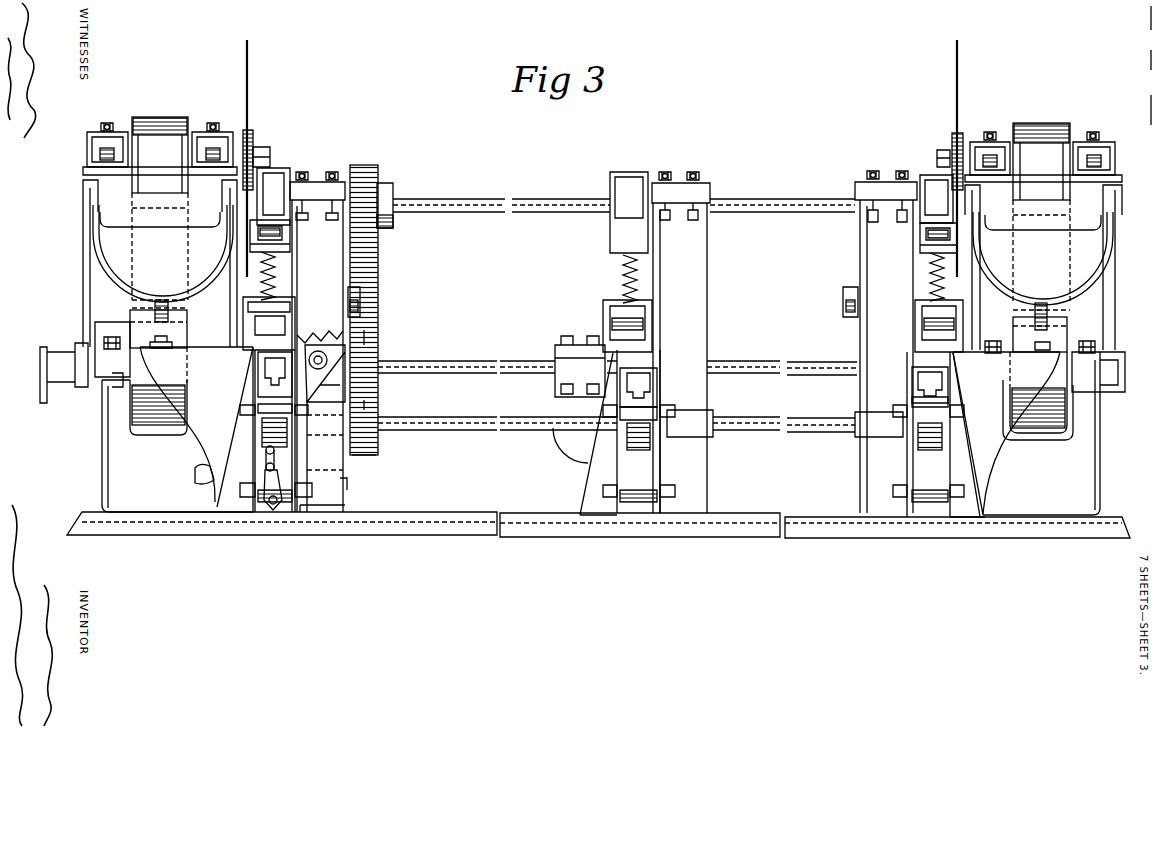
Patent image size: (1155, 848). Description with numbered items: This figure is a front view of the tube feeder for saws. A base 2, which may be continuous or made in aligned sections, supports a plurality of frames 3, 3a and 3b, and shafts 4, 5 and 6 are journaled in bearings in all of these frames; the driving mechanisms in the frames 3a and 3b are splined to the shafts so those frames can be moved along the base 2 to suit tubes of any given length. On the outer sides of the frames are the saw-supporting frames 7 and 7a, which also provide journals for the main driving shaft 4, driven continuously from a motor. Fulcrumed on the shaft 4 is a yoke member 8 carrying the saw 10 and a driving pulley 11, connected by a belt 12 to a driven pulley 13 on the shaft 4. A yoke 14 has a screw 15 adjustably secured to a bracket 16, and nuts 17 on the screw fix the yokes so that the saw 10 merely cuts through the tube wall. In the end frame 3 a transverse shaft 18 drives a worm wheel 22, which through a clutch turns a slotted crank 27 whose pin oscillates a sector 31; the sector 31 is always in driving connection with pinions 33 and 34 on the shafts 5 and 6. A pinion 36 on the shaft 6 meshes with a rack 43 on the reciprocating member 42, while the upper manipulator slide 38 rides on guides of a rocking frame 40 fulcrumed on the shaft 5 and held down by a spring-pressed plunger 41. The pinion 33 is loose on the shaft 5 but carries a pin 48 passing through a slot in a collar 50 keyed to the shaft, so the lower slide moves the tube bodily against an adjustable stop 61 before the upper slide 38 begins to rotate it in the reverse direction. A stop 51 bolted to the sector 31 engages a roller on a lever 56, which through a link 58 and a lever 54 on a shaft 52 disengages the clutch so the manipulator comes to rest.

The base 2 is at (215, 527).
The frame 3 is at (317, 342).
The frame 3a is at (633, 343).
The frame 3b is at (920, 344).
The main driving shaft 4 is at (72, 352).
The shaft 5 is at (555, 198).
The shaft 6 is at (525, 429).
The saw-supporting frame 7 is at (110, 460).
The saw-supporting frame 7a is at (1054, 433).
The yoke member 8 is at (95, 281).
The saw 10 is at (248, 78).
The driving pulley 11 is at (190, 128).
The belt 12 is at (160, 212).
The driven pulley 13 is at (130, 320).
The yoke 14 is at (100, 249).
The screw 15 is at (162, 304).
The bracket 16 is at (196, 427).
The nuts 17 is at (163, 348).
The transverse shaft 18 is at (312, 346).
The worm wheel 22 is at (316, 522).
The slotted crank 27 is at (345, 380).
The sector 31 is at (372, 336).
The pinion 33 is at (376, 181).
The pinion 34 is at (365, 451).
The pinion 36 is at (262, 425).
The upper manipulator slide 38 is at (283, 235).
The rocking frame 40 is at (279, 169).
The spring-pressed plunger 41 is at (278, 279).
The reciprocating member 42 is at (262, 378).
The rack 43 is at (915, 403).
The pin 48 is at (396, 193).
The collar 50 is at (396, 231).
The stop 51 is at (370, 405).
The shaft 52 is at (275, 504).
The lever 54 is at (280, 510).
The lever 56 is at (343, 481).
The link 58 is at (195, 476).
The adjustable stop 61 is at (359, 298).